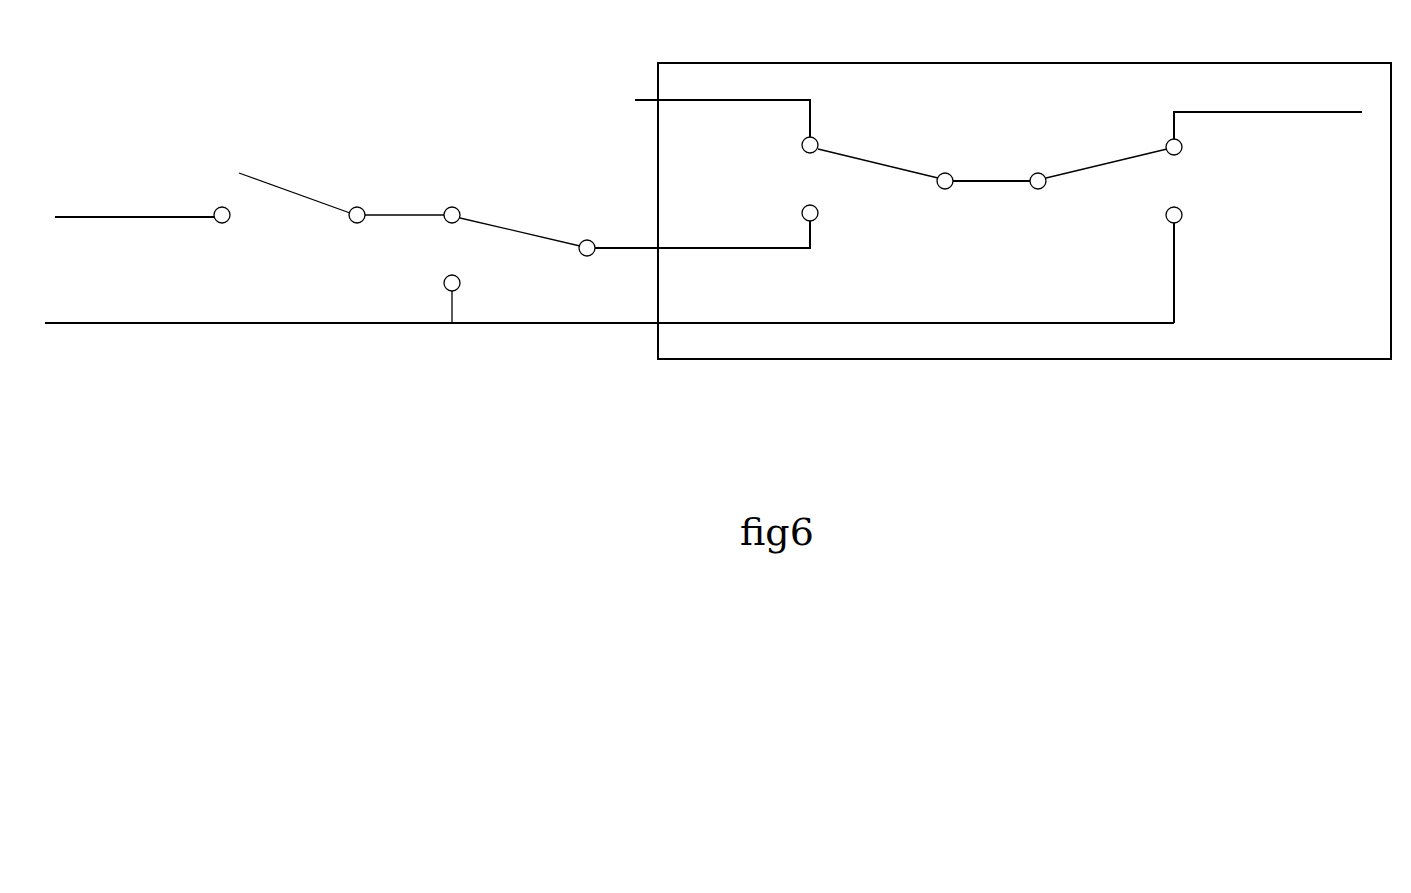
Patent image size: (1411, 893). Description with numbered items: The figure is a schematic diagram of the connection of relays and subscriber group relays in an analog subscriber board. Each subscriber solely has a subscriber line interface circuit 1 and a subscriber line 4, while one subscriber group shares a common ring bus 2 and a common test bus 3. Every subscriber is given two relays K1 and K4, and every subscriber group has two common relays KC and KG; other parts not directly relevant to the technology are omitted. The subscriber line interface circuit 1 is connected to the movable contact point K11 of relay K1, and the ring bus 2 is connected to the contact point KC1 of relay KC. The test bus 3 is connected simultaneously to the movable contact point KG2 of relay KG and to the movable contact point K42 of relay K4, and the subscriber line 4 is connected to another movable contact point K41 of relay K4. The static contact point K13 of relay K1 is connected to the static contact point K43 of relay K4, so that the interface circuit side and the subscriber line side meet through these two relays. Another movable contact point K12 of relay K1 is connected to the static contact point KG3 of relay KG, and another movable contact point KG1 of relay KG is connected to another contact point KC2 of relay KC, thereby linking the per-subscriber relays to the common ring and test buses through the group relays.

The subscriber line interface circuit 1 is at (1001, 211).
The ring bus 2 is at (134, 205).
The test bus 3 is at (609, 311).
The subscriber line 4 is at (1268, 109).
The relay KC is at (294, 224).
The contact point KC1 is at (215, 225).
The contact point KC2 is at (396, 227).
The relay KG is at (491, 299).
The movable contact point KG1 is at (512, 220).
The movable contact point KG2 is at (472, 292).
The static contact point KG3 is at (694, 238).
The relay K1 is at (879, 229).
The movable contact point K11 is at (870, 150).
The movable contact point K12 is at (828, 206).
The static contact point K13 is at (983, 174).
The relay K4 is at (1105, 229).
The movable contact point K41 is at (1159, 140).
The movable contact point K42 is at (1159, 259).
The static contact point K43 is at (1084, 169).